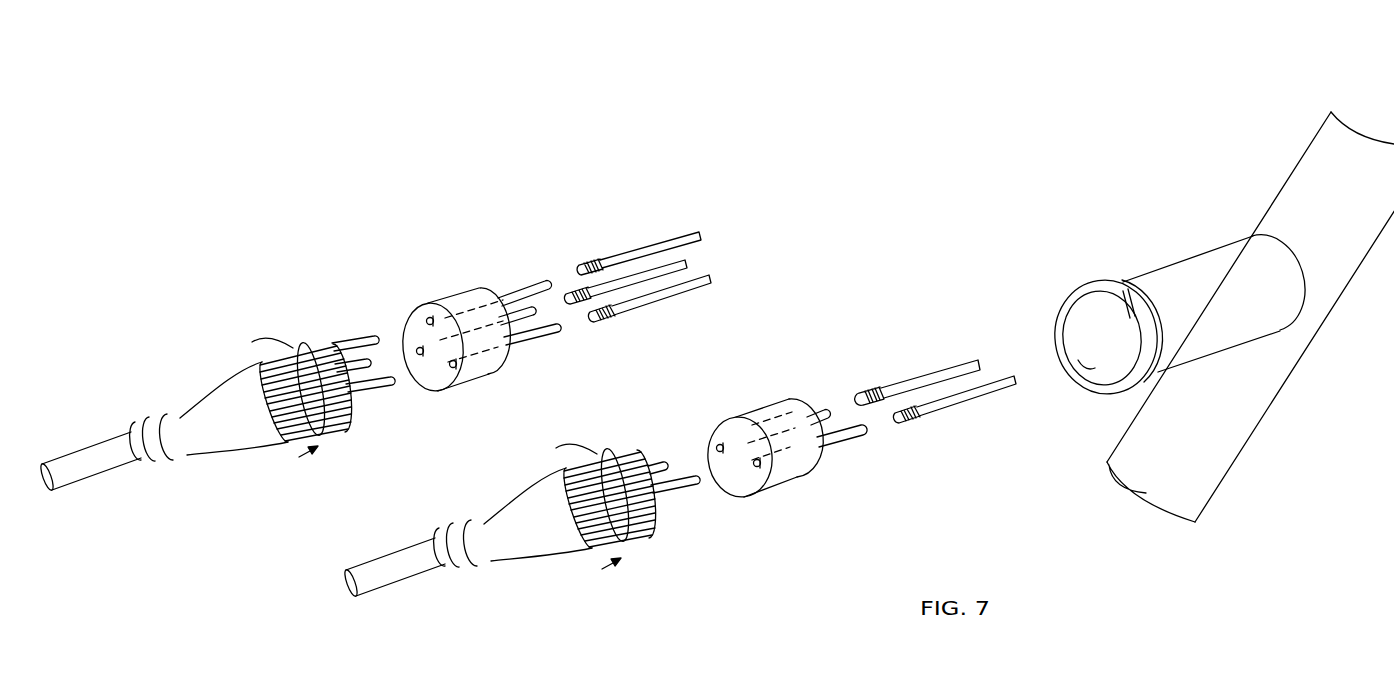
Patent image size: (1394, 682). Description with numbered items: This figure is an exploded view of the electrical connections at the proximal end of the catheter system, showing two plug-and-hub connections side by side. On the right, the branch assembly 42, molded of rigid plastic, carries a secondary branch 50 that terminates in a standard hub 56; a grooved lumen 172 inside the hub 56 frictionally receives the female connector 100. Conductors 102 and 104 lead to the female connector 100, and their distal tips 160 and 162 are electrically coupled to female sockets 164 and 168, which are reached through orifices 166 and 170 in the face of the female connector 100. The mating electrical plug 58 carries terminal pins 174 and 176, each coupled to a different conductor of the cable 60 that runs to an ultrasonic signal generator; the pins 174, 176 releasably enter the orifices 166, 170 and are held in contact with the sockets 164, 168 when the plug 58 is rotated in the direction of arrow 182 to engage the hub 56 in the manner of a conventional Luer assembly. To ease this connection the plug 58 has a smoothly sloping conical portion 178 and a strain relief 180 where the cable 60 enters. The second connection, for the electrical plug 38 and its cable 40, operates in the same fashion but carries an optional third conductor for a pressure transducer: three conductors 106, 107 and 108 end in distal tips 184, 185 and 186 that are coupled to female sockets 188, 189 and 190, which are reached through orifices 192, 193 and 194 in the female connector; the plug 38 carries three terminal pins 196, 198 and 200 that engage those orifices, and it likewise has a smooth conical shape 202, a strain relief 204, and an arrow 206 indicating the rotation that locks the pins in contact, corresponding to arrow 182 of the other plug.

The electrical plug 38 is at (343, 410).
The cable 40 is at (97, 443).
The smooth conical shape 202 is at (240, 452).
The strain relief 204 is at (150, 462).
The rotation arrow 206 is at (320, 437).
The terminal pin 196 is at (363, 337).
The terminal pin 198 is at (374, 358).
The terminal pin 200 is at (391, 385).
The orifice 192 is at (427, 321).
The orifice 193 is at (415, 347).
The orifice 194 is at (460, 368).
The female socket 188 is at (508, 292).
The female socket 189 is at (533, 311).
The female socket 190 is at (535, 338).
The distal tip 184 is at (583, 270).
The distal tip 185 is at (565, 297).
The distal tip 186 is at (595, 318).
The conductor 106 is at (690, 228).
The conductor 107 is at (683, 262).
The conductor 108 is at (707, 285).
The electrical plug 58 is at (653, 508).
The cable 60 is at (407, 548).
The smoothly sloping conical portion 178 is at (547, 560).
The strain relief 180 is at (458, 567).
The arrow 182 is at (623, 547).
The terminal pin 174 is at (661, 468).
The terminal pin 176 is at (698, 487).
The female connector 100 is at (797, 483).
The female socket 164 is at (818, 412).
The orifice 166 is at (717, 446).
The female socket 168 is at (847, 440).
The orifice 170 is at (758, 468).
The distal tip 160 is at (868, 395).
The distal tip 162 is at (905, 421).
The conductor 102 is at (936, 372).
The conductor 104 is at (977, 405).
The branch assembly 42 is at (1316, 194).
The secondary branch 50 is at (1156, 269).
The standard hub 56 is at (1079, 290).
The grooved lumen 172 is at (1090, 365).